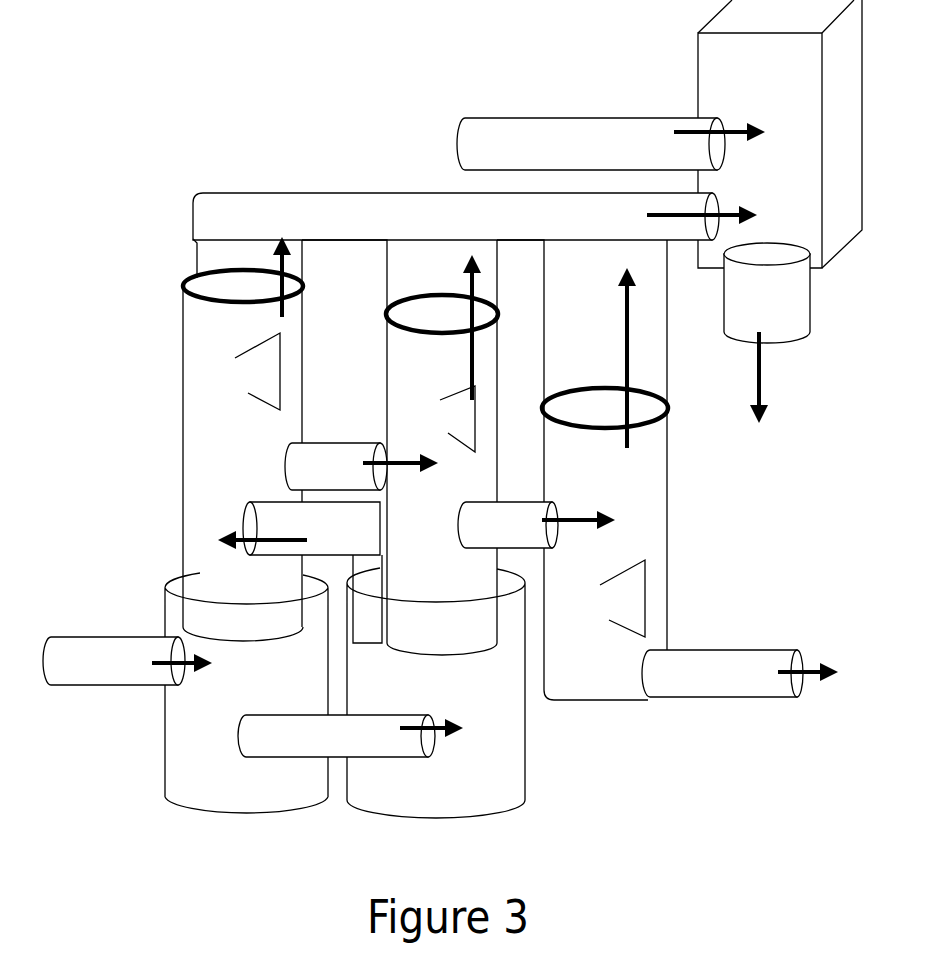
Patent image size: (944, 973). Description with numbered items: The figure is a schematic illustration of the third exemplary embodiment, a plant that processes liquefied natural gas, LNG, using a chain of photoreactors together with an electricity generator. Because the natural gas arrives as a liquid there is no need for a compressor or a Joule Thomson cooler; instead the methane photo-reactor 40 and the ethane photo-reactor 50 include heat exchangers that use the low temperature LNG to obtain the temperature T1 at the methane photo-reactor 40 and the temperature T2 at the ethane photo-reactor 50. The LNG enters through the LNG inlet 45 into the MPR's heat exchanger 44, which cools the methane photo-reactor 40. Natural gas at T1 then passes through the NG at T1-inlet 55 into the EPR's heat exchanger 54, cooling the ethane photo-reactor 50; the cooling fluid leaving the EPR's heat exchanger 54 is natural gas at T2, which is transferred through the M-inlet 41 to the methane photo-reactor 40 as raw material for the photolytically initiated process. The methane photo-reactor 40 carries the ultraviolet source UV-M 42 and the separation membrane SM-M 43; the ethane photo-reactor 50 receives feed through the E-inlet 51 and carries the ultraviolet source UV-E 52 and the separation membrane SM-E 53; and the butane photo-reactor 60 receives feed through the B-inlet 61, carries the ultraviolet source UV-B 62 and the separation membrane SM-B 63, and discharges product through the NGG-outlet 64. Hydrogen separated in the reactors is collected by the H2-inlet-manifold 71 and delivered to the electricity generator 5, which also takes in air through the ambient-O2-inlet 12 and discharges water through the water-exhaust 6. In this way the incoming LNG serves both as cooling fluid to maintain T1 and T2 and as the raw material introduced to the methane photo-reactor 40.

The electricity generator 5 is at (729, 91).
The water-exhaust 6 is at (765, 338).
The ambient-O2-inlet 12 is at (458, 144).
The H2-inlet-manifold 71 is at (367, 218).
The methane photo-reactor 40 is at (215, 323).
The M-inlet 41 is at (293, 526).
The UV-M 42 is at (216, 368).
The SM-M 43 is at (212, 282).
The MPR's heat exchanger 44 is at (198, 742).
The LNG inlet 45 is at (126, 648).
The ethane photo-reactor 50 is at (415, 365).
The E-inlet 51 is at (292, 465).
The UV-E 52 is at (413, 413).
The SM-E 53 is at (397, 313).
The EPR's heat exchanger 54 is at (478, 745).
The NG at T1-inlet 55 is at (268, 755).
The butane photo-reactor 60 is at (624, 477).
The B-inlet 61 is at (512, 550).
The UV-B 62 is at (629, 588).
The SM-B 63 is at (645, 406).
The NGG-outlet 64 is at (688, 683).